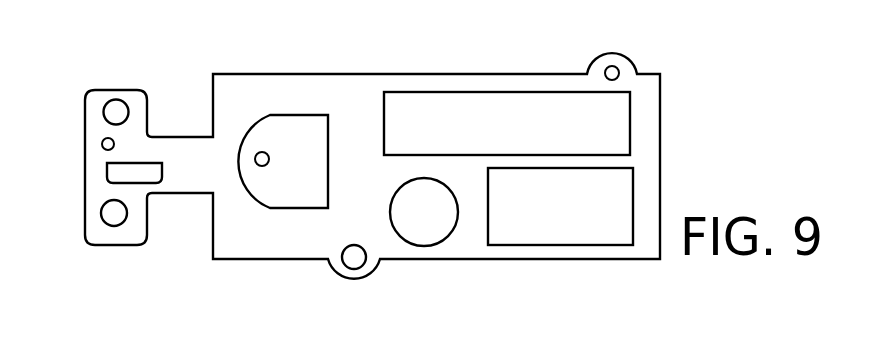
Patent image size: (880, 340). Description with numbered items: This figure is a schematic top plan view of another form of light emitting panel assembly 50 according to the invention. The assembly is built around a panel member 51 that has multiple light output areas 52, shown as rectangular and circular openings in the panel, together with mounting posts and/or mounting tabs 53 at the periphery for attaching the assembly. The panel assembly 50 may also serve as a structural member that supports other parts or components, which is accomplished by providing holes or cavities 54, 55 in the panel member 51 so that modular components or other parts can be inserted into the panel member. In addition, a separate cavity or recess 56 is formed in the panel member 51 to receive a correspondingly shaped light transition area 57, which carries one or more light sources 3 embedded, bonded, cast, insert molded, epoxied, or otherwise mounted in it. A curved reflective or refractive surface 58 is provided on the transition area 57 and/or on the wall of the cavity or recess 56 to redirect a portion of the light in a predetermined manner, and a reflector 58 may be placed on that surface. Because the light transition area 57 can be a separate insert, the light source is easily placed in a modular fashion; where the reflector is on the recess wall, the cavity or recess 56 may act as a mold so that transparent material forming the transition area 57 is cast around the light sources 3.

The light emitting panel assembly 50 is at (507, 48).
The panel member 51 is at (367, 87).
The light output areas 52 is at (433, 232).
The mounting posts and/or mounting tabs 53 is at (115, 100).
The holes or cavities 54 is at (107, 143).
The holes or cavities 55 is at (107, 172).
The cavity or recess 56 is at (290, 208).
The light transition area 57 is at (307, 132).
The curved reflective or refractive surface 58 is at (247, 190).
The light sources 3 is at (262, 152).